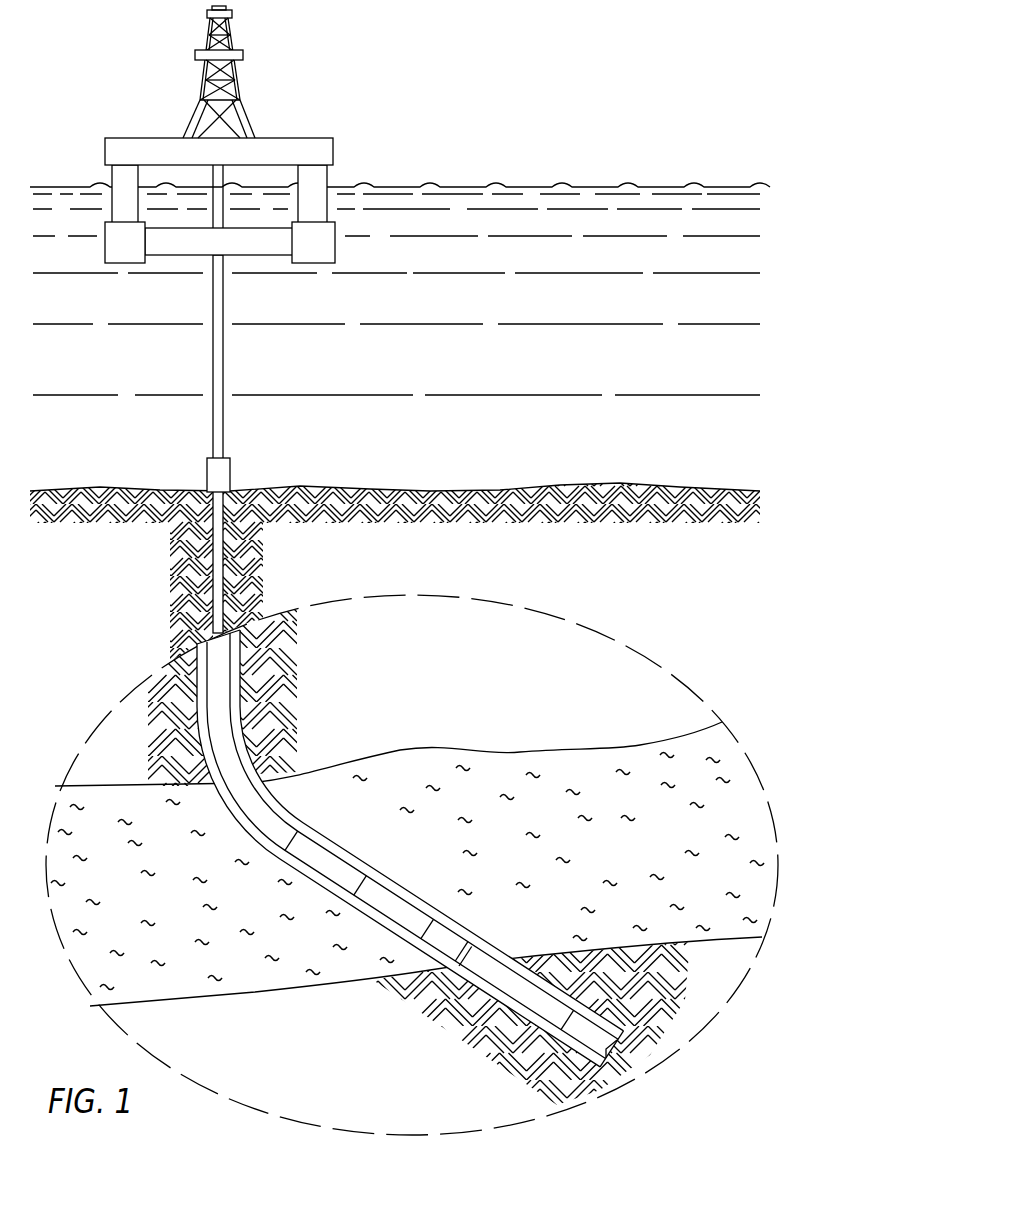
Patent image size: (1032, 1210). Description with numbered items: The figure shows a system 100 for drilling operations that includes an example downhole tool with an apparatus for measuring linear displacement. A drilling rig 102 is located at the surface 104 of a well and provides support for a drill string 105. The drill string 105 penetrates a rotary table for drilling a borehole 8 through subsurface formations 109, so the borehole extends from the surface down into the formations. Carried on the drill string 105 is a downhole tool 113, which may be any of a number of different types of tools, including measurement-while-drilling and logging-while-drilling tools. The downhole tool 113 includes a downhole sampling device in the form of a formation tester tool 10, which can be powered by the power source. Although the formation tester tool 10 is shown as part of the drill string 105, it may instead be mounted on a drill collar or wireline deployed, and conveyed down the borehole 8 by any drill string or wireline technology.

The system 100 is at (368, 60).
The drilling rig 102 is at (233, 37).
The surface 104 is at (230, 466).
The drill string 105 is at (266, 822).
The subsurface formations 109 is at (272, 652).
The borehole 8 is at (240, 700).
The formation tester tool 10 is at (387, 890).
The downhole tool 113 is at (445, 942).